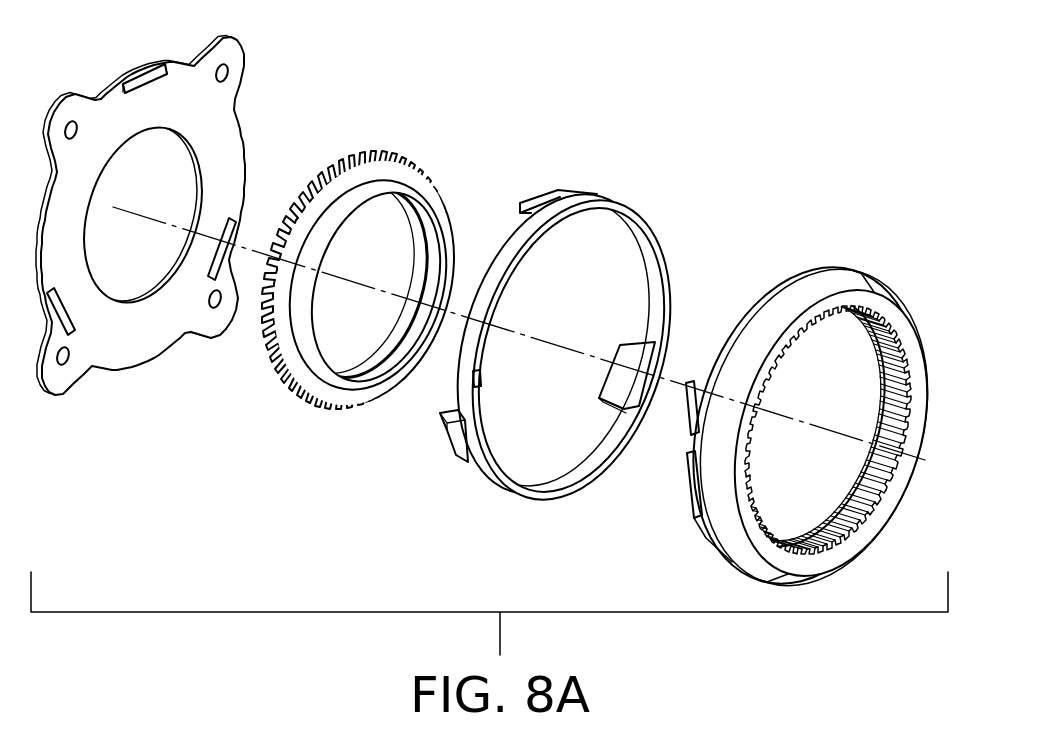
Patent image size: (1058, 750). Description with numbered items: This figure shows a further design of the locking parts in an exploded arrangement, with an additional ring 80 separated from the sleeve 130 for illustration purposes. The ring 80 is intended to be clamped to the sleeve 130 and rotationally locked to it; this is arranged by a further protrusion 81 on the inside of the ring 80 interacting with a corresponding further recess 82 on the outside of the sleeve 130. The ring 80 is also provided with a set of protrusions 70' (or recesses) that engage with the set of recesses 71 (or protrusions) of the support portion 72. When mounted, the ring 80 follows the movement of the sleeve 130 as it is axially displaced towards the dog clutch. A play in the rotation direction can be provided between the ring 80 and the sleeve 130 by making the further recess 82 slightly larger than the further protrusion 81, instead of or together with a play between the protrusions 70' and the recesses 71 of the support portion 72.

The set of recesses 71 is at (150, 73).
The support portion 72 is at (148, 327).
The additional ring 80 is at (515, 240).
The set of protrusions 70' is at (506, 324).
The further protrusion 81 is at (473, 379).
The sleeve 130 is at (823, 284).
The further recess 82 is at (690, 451).